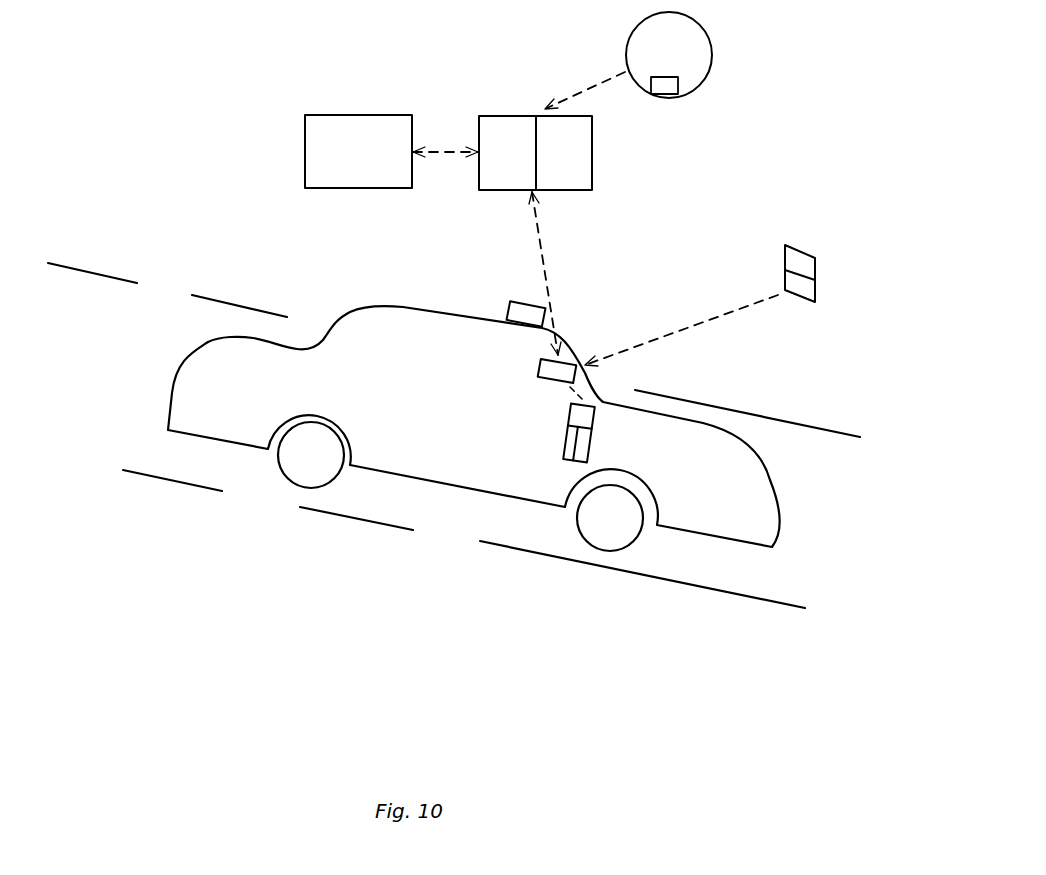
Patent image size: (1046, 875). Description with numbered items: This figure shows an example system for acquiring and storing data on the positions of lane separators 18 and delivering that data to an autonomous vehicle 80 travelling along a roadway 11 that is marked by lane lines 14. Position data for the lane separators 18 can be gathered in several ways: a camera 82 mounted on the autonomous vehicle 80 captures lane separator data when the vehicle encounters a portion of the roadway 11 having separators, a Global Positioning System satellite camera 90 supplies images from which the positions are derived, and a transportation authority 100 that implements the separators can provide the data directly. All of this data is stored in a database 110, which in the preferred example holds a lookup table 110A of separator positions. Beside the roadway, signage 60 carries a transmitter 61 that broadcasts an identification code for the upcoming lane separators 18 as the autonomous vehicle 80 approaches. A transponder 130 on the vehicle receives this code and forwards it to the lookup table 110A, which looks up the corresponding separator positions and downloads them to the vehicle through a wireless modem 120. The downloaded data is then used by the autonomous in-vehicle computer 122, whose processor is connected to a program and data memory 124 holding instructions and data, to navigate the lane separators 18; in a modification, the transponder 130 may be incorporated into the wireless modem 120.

The roadway 11 is at (168, 287).
The lane marking 14 is at (92, 270).
The lane separators 18 is at (688, 398).
The signage 60 is at (784, 257).
The transmitter 61 is at (816, 288).
The autonomous vehicle 80 is at (459, 428).
The camera 82 is at (522, 301).
The Global Positioning System (GPS) satellite camera 90 is at (666, 95).
The transportation authority 100 is at (358, 151).
The database 110 is at (592, 152).
The lookup table 110A is at (586, 165).
The wireless modem 120 is at (575, 430).
The autonomous in-vehicle computer 122 is at (566, 440).
The program and data memory 124 is at (595, 442).
The transponder 130 is at (568, 361).